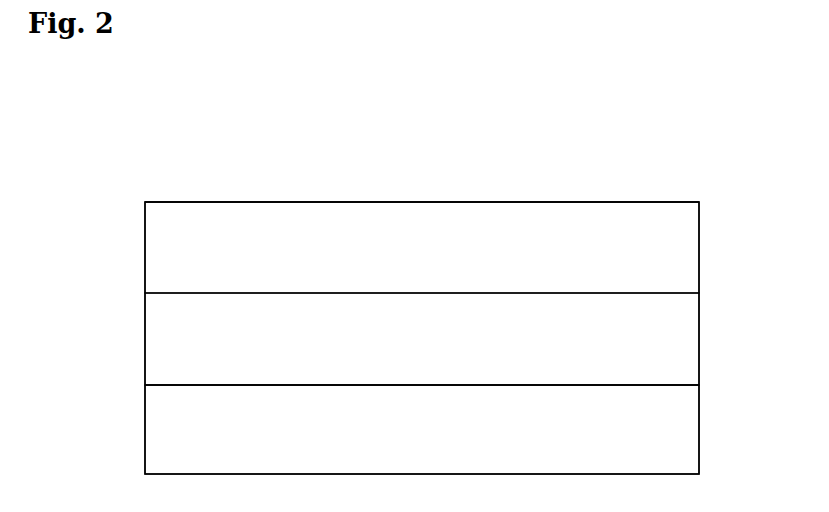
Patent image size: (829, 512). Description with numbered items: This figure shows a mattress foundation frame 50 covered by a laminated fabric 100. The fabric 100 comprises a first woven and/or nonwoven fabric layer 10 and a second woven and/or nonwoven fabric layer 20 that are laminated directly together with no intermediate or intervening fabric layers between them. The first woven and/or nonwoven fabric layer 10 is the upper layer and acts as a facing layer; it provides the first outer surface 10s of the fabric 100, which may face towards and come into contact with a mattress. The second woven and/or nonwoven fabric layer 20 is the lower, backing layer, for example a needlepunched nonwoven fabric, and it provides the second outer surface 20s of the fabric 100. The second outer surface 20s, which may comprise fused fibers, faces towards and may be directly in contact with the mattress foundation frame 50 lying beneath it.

The fabric 100 is at (666, 172).
The first woven and/or nonwoven fabric layer 10 is at (678, 239).
The second woven and/or nonwoven fabric layer 20 is at (658, 346).
The mattress foundation frame 50 is at (673, 437).
The first outer surface 10s is at (410, 201).
The second outer surface 20s is at (144, 383).